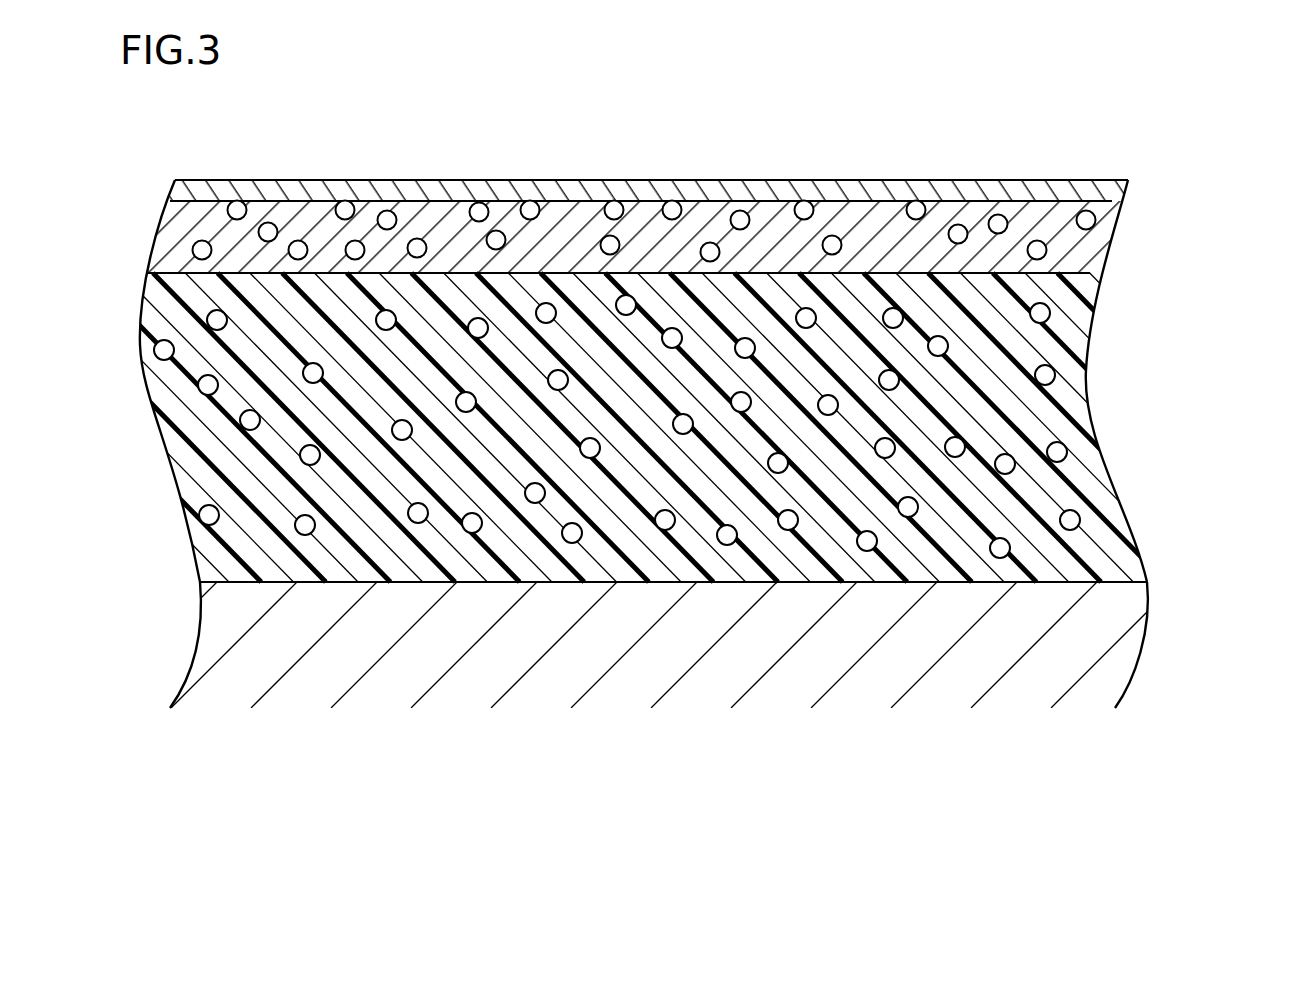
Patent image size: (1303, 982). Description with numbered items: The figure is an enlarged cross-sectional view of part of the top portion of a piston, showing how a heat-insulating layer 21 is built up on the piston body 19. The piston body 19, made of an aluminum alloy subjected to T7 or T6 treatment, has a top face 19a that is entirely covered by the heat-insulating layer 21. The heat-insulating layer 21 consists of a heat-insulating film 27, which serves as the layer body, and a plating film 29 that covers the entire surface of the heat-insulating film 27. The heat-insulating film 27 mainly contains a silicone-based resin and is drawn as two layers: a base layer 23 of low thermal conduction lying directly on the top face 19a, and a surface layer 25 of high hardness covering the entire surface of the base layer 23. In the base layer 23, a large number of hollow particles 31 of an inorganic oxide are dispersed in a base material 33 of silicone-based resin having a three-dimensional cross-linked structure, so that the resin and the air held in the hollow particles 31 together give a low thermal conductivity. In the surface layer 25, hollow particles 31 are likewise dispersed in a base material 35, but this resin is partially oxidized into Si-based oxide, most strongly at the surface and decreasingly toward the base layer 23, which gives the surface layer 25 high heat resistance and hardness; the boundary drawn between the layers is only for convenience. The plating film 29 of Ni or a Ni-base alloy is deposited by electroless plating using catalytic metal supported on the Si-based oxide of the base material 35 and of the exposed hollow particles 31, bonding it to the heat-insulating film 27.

The piston body 19 is at (218, 641).
The top face 19a is at (1095, 562).
The heat-insulating layer 21 is at (651, 381).
The base layer 23 is at (651, 427).
The surface layer 25 is at (1100, 235).
The heat-insulating film 27 is at (651, 391).
The plating film 29 is at (1108, 191).
The hollow particles 31 is at (344, 201).
The base material 33 is at (172, 437).
The base material 35 is at (172, 236).